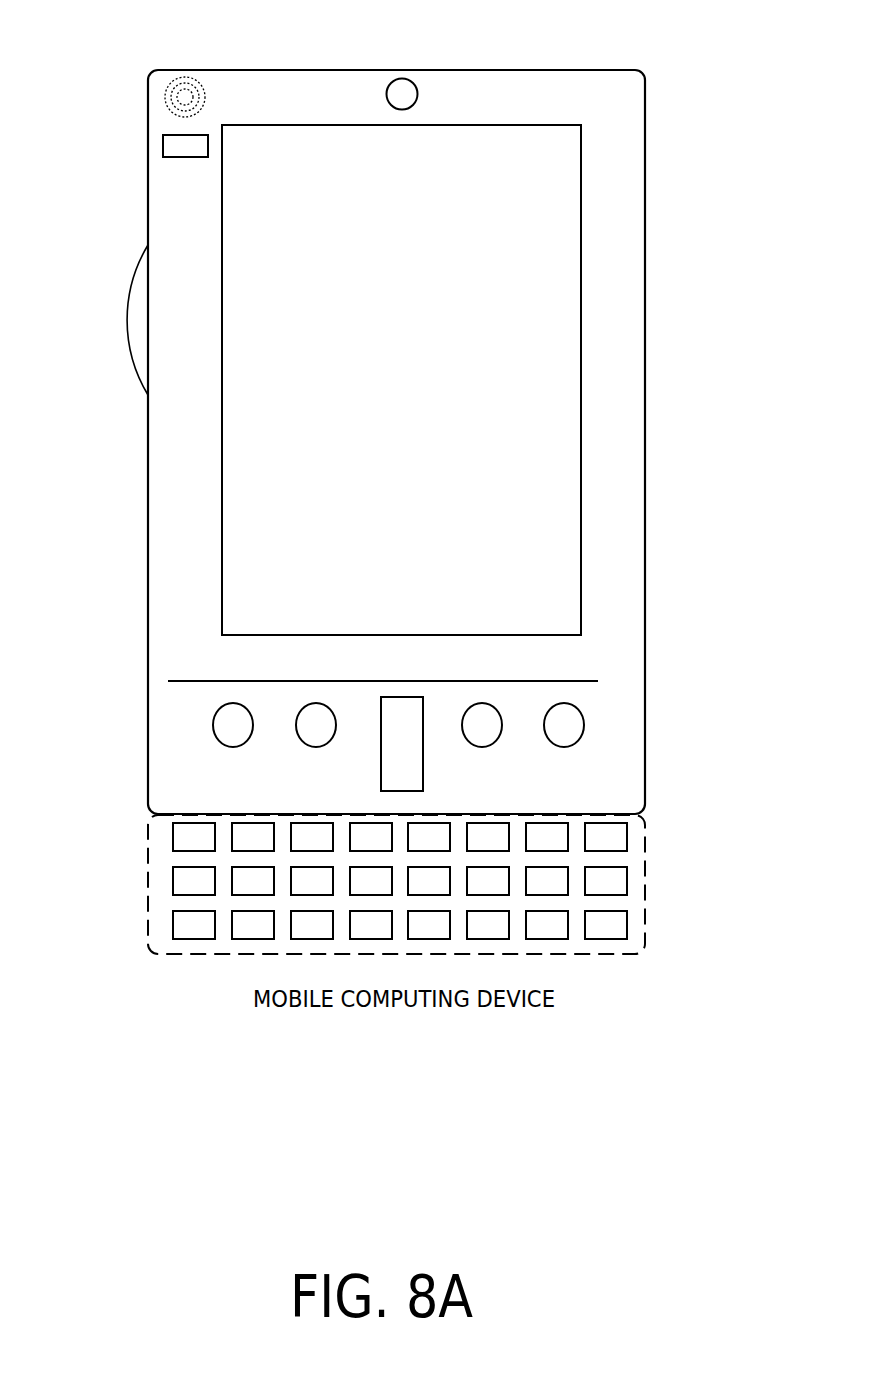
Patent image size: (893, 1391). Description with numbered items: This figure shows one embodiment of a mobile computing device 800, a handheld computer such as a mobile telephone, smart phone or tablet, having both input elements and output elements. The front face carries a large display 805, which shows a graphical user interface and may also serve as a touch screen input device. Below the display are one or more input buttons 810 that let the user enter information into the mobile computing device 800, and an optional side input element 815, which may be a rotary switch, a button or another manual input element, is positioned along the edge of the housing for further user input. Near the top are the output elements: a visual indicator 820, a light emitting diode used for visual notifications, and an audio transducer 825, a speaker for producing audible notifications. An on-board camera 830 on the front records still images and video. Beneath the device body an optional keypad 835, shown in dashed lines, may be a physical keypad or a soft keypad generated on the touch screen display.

The mobile computing device 800 is at (645, 98).
The display 805 is at (250, 474).
The input buttons 810 is at (381, 752).
The side input element 815 is at (127, 305).
The visual indicator 820 is at (168, 142).
The audio transducer 825 is at (165, 88).
The on-board camera 830 is at (394, 79).
The keypad 835 is at (160, 884).